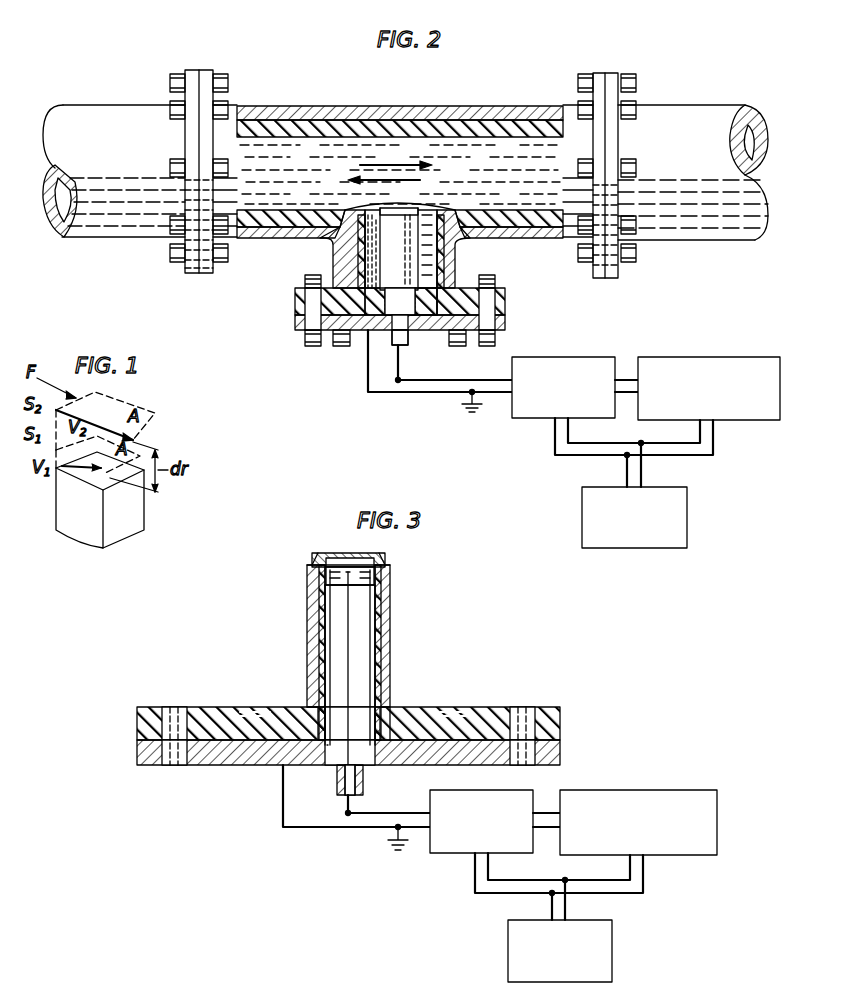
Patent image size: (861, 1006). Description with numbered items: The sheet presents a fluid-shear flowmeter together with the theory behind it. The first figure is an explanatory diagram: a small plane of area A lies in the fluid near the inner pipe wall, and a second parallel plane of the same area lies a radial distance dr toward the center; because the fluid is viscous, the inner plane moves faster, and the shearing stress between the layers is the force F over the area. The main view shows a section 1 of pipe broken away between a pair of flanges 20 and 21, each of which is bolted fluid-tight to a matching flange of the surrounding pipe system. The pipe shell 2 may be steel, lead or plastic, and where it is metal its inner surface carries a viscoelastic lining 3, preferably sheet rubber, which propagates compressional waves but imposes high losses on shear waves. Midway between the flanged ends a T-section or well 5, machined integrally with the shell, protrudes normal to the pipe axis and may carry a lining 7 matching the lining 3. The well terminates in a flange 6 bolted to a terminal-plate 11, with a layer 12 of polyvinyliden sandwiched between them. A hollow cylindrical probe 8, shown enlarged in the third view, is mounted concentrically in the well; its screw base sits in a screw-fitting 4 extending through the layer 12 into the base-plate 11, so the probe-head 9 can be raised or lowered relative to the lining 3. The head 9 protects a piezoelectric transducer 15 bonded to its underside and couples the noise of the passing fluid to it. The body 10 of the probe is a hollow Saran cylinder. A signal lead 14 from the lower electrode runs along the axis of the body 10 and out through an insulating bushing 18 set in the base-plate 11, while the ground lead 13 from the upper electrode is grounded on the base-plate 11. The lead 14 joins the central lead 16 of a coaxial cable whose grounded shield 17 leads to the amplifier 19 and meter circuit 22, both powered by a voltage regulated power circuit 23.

In FIG. 2, the section of pipe 1 is at (290, 150).
In FIG. 2, the pipe shell 2 is at (262, 106).
In FIG. 2, the lining 3 is at (268, 232).
In FIG. 2, the screw-fitting 4 is at (430, 320).
In FIG. 3, the screw-fitting 4 is at (405, 707).
In FIG. 2, the T-section or well 5 is at (333, 250).
In FIG. 2, the flange 6 is at (304, 292).
In FIG. 2, the lining 7 is at (440, 255).
In FIG. 2, the probe 8 is at (400, 259).
In FIG. 3, the probe 8 is at (395, 596).
In FIG. 3, the probe-head 9 is at (373, 553).
In FIG. 3, the body 10 is at (385, 650).
In FIG. 2, the terminal-plate 11 is at (296, 328).
In FIG. 3, the terminal-plate 11 is at (210, 765).
In FIG. 2, the layer of polyvinyliden 12 is at (295, 310).
In FIG. 3, the layer of polyvinyliden 12 is at (150, 707).
In FIG. 3, the ground lead 13 is at (325, 637).
In FIG. 3, the signal lead 14 is at (360, 678).
In FIG. 3, the piezoelectric transducer 15 is at (318, 575).
In FIG. 2, the central lead 16 is at (428, 380).
In FIG. 3, the central lead 16 is at (388, 813).
In FIG. 2, the grounded shield 17 is at (392, 392).
In FIG. 3, the grounded shield 17 is at (296, 827).
In FIG. 2, the insulating bushing 18 is at (392, 338).
In FIG. 3, the insulating bushing 18 is at (337, 778).
In FIG. 2, the amplifier 19 is at (567, 360).
In FIG. 3, the amplifier 19 is at (478, 795).
In FIG. 2, the flange 20 is at (199, 70).
In FIG. 2, the flange 21 is at (605, 73).
In FIG. 2, the meter circuit 22 is at (695, 358).
In FIG. 3, the meter circuit 22 is at (648, 792).
In FIG. 2, the power circuit 23 is at (687, 512).
In FIG. 3, the power circuit 23 is at (606, 942).